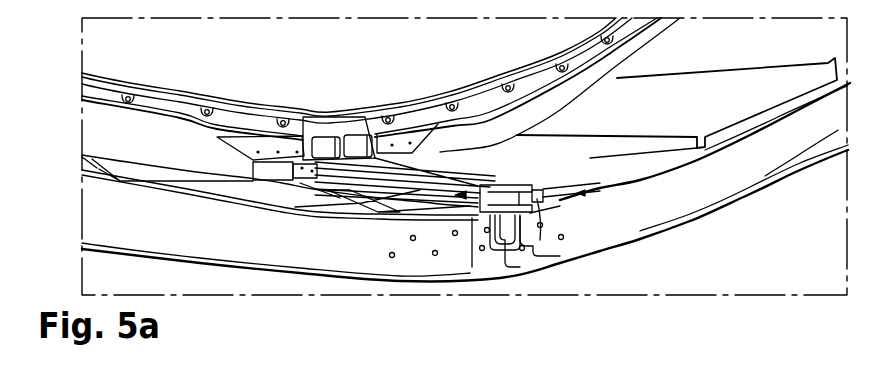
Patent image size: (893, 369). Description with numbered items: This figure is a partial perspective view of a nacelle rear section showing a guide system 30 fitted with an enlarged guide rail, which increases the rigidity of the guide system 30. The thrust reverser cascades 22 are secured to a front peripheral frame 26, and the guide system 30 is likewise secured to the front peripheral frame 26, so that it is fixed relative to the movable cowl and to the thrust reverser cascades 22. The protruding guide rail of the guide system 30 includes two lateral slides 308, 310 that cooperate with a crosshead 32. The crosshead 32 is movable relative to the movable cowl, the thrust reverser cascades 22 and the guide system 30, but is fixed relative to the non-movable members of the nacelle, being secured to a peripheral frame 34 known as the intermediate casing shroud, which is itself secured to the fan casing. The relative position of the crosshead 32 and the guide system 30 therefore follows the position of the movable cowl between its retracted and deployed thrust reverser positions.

The thrust reverser cascades 22 is at (590, 158).
The front peripheral frame 26 is at (267, 238).
The guide system 30 is at (527, 209).
The crosshead 32 is at (323, 117).
The peripheral frame 34 is at (175, 105).
The lateral slide 308 is at (492, 210).
The lateral slide 310 is at (560, 196).